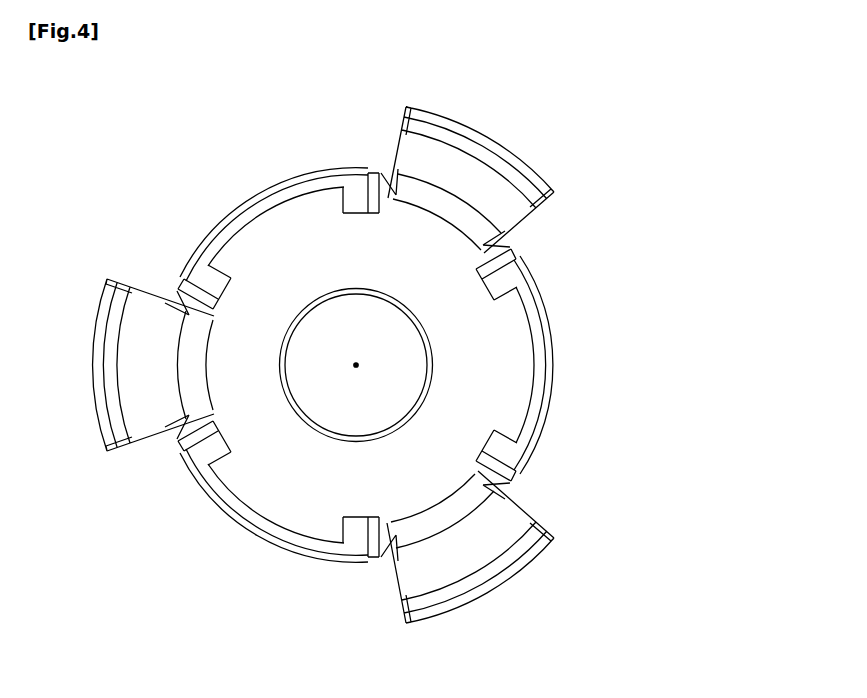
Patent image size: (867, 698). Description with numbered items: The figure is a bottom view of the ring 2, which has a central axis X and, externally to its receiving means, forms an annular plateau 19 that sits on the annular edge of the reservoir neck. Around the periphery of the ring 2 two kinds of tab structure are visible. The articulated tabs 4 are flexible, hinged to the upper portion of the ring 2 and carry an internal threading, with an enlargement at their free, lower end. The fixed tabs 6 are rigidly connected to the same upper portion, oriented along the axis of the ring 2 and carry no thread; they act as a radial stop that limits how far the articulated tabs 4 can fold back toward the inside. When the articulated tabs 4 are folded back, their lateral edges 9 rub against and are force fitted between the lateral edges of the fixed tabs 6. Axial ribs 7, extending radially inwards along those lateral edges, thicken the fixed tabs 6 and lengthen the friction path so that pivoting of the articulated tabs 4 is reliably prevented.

The ring 2 is at (655, 140).
The articulated tabs 4 is at (477, 150).
The fixed tabs 6 is at (288, 194).
The axial ribs 7 is at (357, 196).
The lateral edges 9 is at (400, 139).
The annular plateau 19 is at (296, 473).